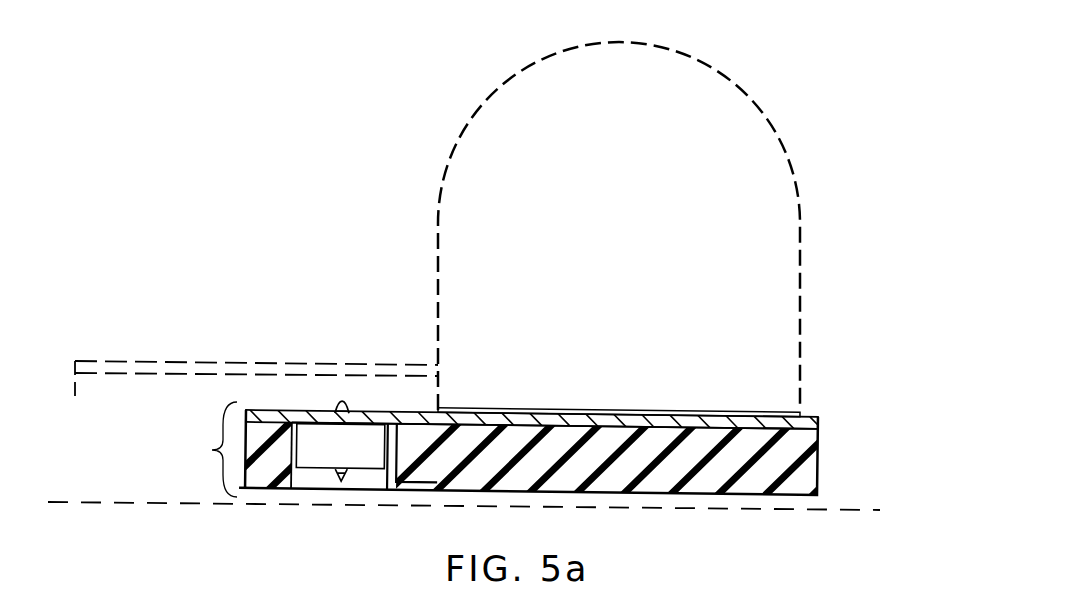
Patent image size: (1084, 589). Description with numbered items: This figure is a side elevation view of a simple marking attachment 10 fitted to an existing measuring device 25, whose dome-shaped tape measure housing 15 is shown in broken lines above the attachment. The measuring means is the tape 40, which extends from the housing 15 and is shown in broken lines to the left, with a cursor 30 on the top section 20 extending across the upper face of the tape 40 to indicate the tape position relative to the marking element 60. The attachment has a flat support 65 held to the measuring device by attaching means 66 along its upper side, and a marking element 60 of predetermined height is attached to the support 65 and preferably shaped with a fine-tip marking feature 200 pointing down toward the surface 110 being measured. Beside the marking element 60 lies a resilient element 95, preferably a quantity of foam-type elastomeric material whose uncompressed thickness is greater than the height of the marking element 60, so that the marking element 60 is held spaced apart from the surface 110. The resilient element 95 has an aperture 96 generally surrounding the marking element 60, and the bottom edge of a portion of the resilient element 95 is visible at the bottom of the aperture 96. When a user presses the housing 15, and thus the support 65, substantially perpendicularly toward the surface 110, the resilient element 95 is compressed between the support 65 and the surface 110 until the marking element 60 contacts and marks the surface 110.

The marking attachment 10 is at (211, 449).
The tape measure housing 15 is at (803, 266).
The top section 20 is at (438, 310).
The existing measuring device 25 is at (702, 62).
The cursor 30 is at (340, 400).
The tape 40 is at (190, 360).
The marking element 60 is at (355, 457).
The support 65 is at (808, 422).
The means for attaching the support 66 is at (619, 408).
The resilient element 95 is at (810, 473).
The aperture 96 is at (365, 480).
The surface 110 is at (118, 503).
The fine-tip marking feature 200 is at (333, 478).